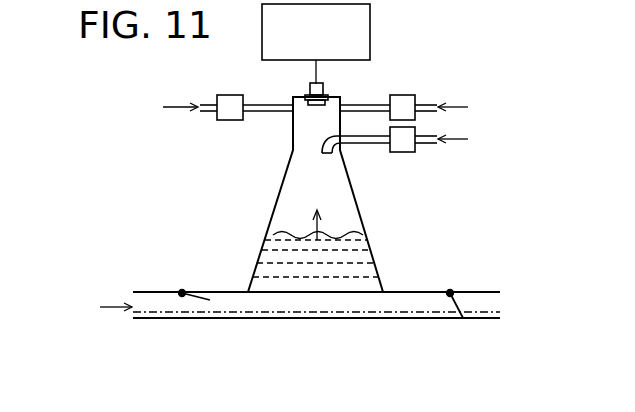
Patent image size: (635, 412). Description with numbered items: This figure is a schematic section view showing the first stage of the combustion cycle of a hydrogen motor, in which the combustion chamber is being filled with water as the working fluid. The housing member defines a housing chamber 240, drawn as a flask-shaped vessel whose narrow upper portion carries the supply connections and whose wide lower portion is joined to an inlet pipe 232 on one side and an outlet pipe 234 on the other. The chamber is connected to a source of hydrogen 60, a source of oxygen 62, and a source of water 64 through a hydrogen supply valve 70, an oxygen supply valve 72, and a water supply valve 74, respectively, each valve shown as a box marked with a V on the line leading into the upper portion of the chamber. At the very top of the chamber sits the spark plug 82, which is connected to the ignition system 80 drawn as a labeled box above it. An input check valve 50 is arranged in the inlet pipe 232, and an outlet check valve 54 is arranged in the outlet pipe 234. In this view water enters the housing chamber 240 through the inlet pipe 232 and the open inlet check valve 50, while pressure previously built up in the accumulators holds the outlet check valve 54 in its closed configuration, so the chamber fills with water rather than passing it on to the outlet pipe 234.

The input check valve 50 is at (200, 300).
The outlet check valve 54 is at (458, 305).
The source of hydrogen 60 is at (178, 108).
The source of oxygen 62 is at (463, 106).
The source of water 64 is at (457, 143).
The hydrogen supply valve 70 is at (226, 122).
The oxygen supply valve 72 is at (402, 95).
The water supply valve 74 is at (408, 153).
The ignition system 80 is at (363, 32).
The spark plug 82 is at (308, 88).
The inlet pipe 232 is at (148, 292).
The outlet pipe 234 is at (430, 292).
The housing chamber 240 is at (290, 207).